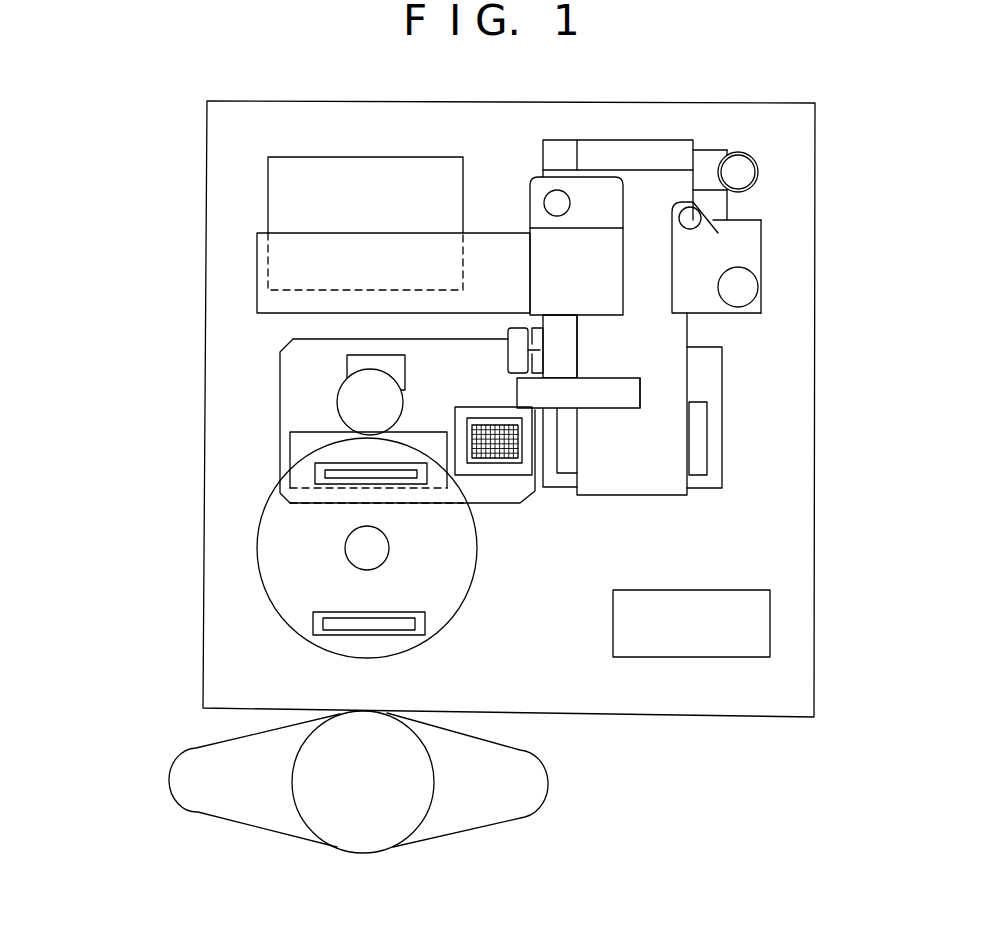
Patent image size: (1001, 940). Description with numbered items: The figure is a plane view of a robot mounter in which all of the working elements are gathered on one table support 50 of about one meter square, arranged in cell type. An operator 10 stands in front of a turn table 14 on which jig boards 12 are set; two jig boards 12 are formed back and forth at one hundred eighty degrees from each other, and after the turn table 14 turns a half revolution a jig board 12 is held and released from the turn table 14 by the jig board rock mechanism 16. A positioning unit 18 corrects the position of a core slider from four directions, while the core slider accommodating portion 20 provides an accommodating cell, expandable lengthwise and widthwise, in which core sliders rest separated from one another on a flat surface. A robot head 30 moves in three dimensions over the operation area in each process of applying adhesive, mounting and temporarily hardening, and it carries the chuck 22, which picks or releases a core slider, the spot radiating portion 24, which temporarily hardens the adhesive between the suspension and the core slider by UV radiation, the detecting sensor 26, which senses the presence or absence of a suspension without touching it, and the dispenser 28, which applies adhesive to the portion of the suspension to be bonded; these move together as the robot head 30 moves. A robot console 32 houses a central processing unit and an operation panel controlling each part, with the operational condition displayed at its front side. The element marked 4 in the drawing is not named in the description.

The label 4 is at (337, 478).
The operator 10 is at (190, 748).
The jig board 12 is at (313, 470).
The turn table 14 is at (255, 547).
The jig board rock mechanism 16 is at (290, 452).
The positioning unit 18 is at (337, 392).
The core slider accommodating portion 20 is at (522, 453).
The chuck 22 is at (578, 395).
The spot radiating portion 24 is at (632, 395).
The detecting sensor 26 is at (543, 330).
The dispenser 28 is at (525, 358).
The robot head 30 is at (682, 433).
The robot console 32 is at (770, 620).
The table support 50 is at (814, 667).